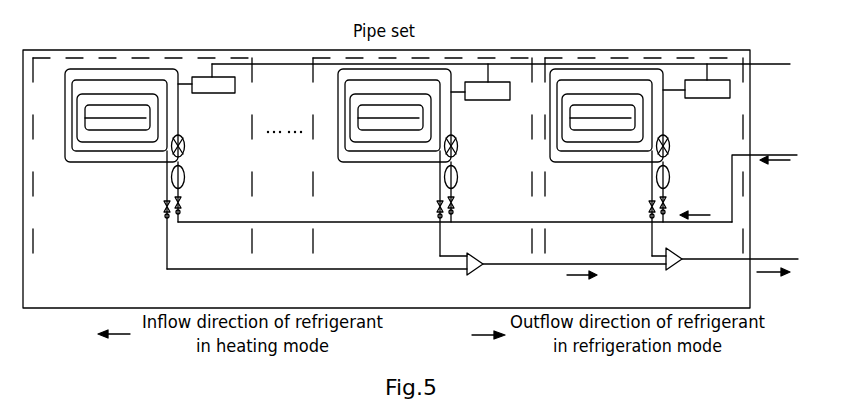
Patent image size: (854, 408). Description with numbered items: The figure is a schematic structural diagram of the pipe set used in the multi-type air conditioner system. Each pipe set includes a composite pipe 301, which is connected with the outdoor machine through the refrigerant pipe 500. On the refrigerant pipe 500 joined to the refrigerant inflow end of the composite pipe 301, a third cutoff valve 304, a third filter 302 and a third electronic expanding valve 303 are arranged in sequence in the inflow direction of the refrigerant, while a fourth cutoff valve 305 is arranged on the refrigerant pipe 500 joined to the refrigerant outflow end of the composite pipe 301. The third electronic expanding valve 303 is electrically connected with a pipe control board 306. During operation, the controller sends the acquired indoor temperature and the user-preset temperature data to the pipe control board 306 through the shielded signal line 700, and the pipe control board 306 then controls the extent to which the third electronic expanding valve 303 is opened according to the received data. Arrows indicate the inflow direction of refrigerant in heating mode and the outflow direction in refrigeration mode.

The composite pipe 301 is at (593, 68).
The shielded signal line 700 is at (410, 152).
The pipe control board 306 is at (790, 82).
The third electronic expanding valve 303 is at (715, 120).
The third filter 302 is at (715, 155).
The third cutoff valve 304 is at (715, 193).
The fourth cutoff valve 305 is at (648, 197).
The refrigerant pipe 500 is at (740, 196).